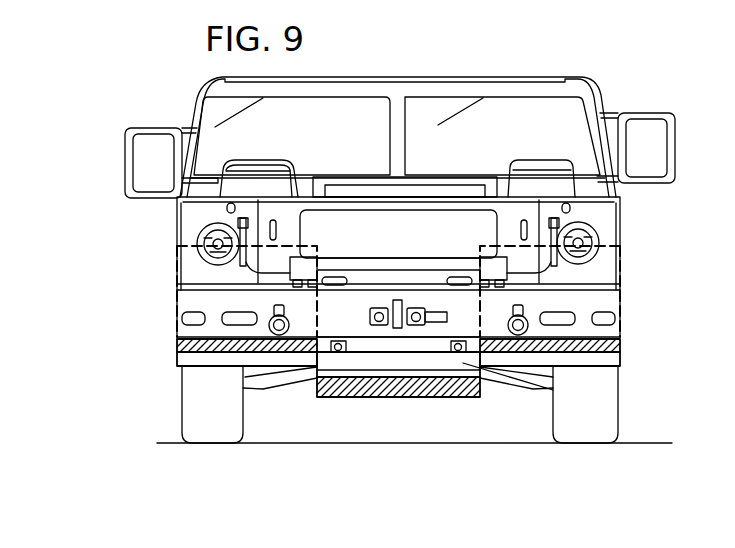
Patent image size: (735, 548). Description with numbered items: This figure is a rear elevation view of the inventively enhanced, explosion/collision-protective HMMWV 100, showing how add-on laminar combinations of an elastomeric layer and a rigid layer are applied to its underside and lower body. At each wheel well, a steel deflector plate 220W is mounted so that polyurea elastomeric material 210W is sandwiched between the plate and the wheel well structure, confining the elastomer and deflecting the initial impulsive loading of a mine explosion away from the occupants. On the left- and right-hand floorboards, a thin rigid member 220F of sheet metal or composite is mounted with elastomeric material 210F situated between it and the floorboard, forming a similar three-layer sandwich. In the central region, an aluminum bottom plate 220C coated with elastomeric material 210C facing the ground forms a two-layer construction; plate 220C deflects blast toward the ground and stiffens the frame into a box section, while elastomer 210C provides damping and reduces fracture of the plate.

The explosion/collision-protective HMMWV 100 is at (96, 212).
The elastomeric material 210W is at (404, 290).
The rigid member 220W is at (197, 279).
The elastomeric material 210F is at (177, 345).
The rigid member 220F is at (177, 360).
The elastomeric material 210C is at (317, 387).
The bottom plate 220C is at (482, 368).